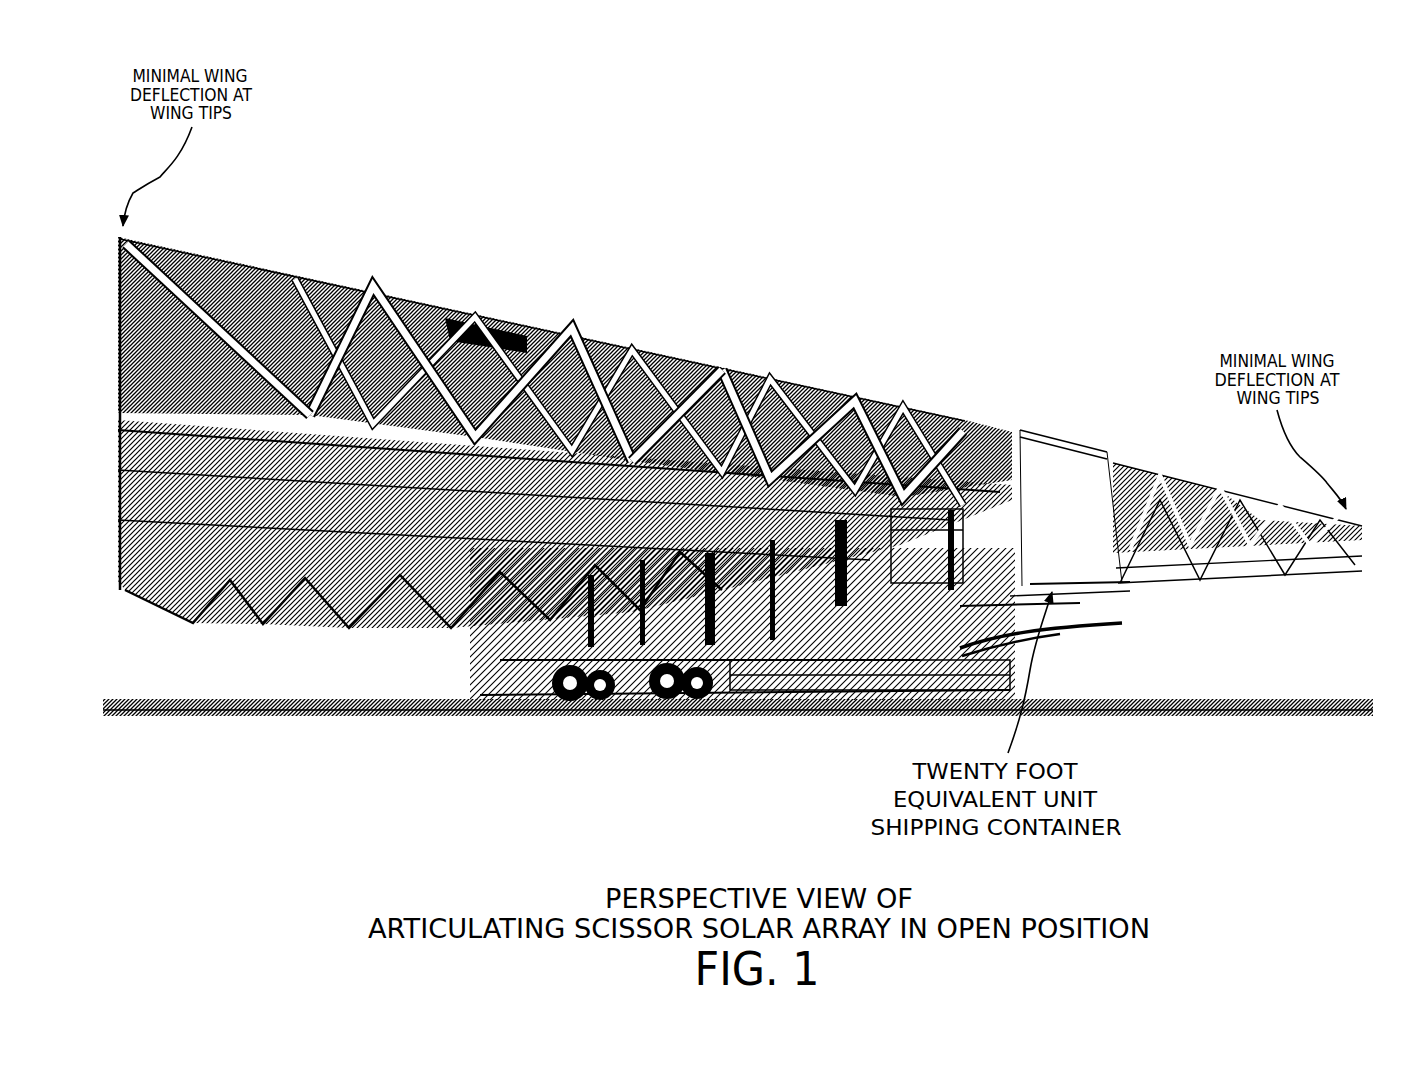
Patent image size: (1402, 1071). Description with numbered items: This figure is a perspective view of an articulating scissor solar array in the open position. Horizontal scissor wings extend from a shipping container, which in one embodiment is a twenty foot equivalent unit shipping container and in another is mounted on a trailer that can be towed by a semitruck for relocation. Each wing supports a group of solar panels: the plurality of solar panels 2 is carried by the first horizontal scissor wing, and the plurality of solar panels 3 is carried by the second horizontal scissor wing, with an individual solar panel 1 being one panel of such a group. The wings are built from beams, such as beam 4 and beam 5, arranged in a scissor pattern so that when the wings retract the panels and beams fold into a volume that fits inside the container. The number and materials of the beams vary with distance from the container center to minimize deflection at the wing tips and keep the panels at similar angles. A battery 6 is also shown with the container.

The solar panel 1 is at (469, 321).
The plurality of solar panels 2 is at (516, 326).
The plurality of solar panels 3 is at (1211, 487).
The beam 4 is at (746, 367).
The beam 5 is at (154, 252).
The battery 6 is at (914, 524).